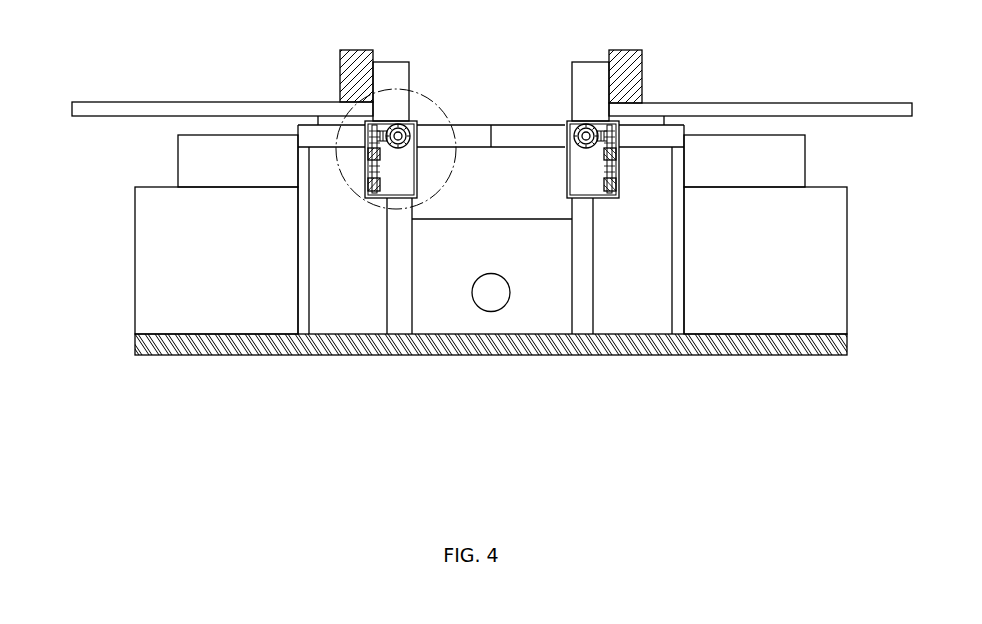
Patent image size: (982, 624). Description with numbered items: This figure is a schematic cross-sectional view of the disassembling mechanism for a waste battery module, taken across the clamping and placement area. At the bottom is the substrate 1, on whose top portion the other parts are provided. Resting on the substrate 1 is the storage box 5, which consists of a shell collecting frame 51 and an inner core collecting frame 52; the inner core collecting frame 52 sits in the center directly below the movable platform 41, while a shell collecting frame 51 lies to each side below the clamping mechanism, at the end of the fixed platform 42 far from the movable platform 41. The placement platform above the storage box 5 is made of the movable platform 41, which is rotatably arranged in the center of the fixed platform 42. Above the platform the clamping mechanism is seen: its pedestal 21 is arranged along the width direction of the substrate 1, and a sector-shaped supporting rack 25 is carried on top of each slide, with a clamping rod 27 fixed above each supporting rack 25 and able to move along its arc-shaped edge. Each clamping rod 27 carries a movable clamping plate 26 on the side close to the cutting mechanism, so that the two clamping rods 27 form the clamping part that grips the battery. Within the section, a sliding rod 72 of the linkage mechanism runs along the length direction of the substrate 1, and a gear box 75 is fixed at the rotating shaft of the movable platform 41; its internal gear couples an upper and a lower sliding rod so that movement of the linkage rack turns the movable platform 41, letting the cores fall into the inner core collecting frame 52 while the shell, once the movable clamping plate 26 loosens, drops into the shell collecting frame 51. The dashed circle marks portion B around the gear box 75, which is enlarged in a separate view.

The substrate 1 is at (208, 353).
The storage box 5 is at (423, 433).
The shell collecting frame 51 is at (255, 318).
The inner core collecting frame 52 is at (488, 322).
The pedestal 21 is at (227, 166).
The supporting rack 25 is at (100, 104).
The movable clamping plate 26 is at (387, 73).
The clamping rod 27 is at (350, 68).
The movable platform 41 is at (527, 136).
The fixed platform 42 is at (655, 137).
The sliding rod 72 is at (497, 298).
The gear box 75 is at (582, 182).
The portion B is at (443, 110).